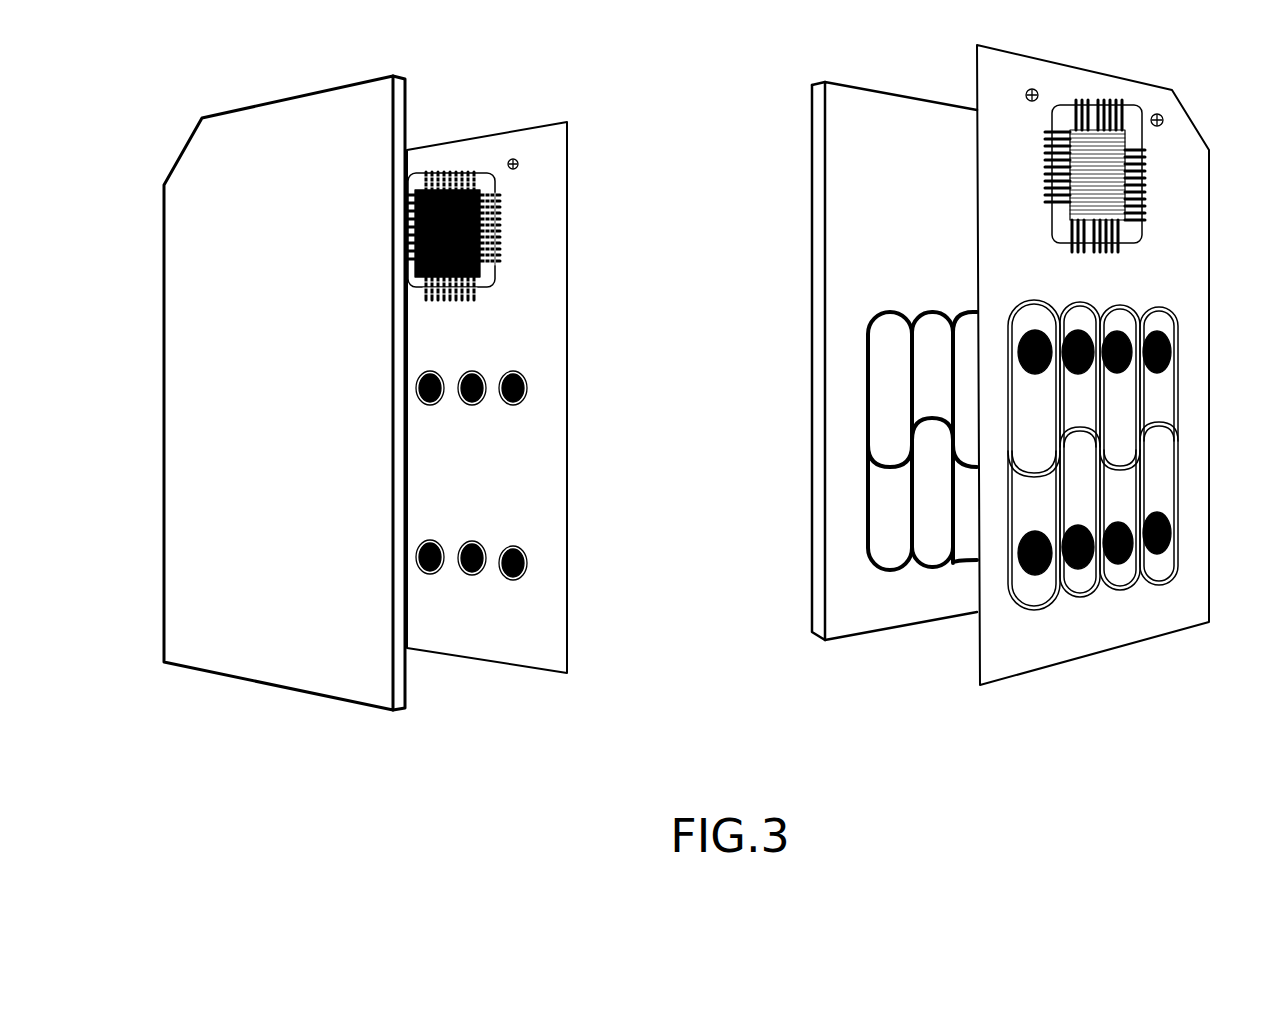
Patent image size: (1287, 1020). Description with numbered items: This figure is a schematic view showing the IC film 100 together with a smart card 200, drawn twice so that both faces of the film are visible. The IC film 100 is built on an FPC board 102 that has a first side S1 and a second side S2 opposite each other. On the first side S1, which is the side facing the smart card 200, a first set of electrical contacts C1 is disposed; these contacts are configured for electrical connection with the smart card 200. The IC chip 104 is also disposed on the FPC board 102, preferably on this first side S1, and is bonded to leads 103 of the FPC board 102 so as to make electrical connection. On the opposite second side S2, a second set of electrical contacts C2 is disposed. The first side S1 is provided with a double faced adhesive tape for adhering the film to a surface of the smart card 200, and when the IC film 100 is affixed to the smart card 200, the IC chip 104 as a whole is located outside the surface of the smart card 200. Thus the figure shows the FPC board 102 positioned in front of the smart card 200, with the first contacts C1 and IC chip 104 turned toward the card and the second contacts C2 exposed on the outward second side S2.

The IC film 100 is at (603, 129).
The FPC board 102 is at (568, 443).
The leads 103 is at (499, 222).
The IC chip 104 is at (480, 270).
The smart card 200 is at (163, 250).
The first set of electrical contacts C1 is at (513, 580).
The second set of electrical contacts C2 is at (1118, 593).
The first side S1 is at (450, 645).
The second side S2 is at (1068, 633).